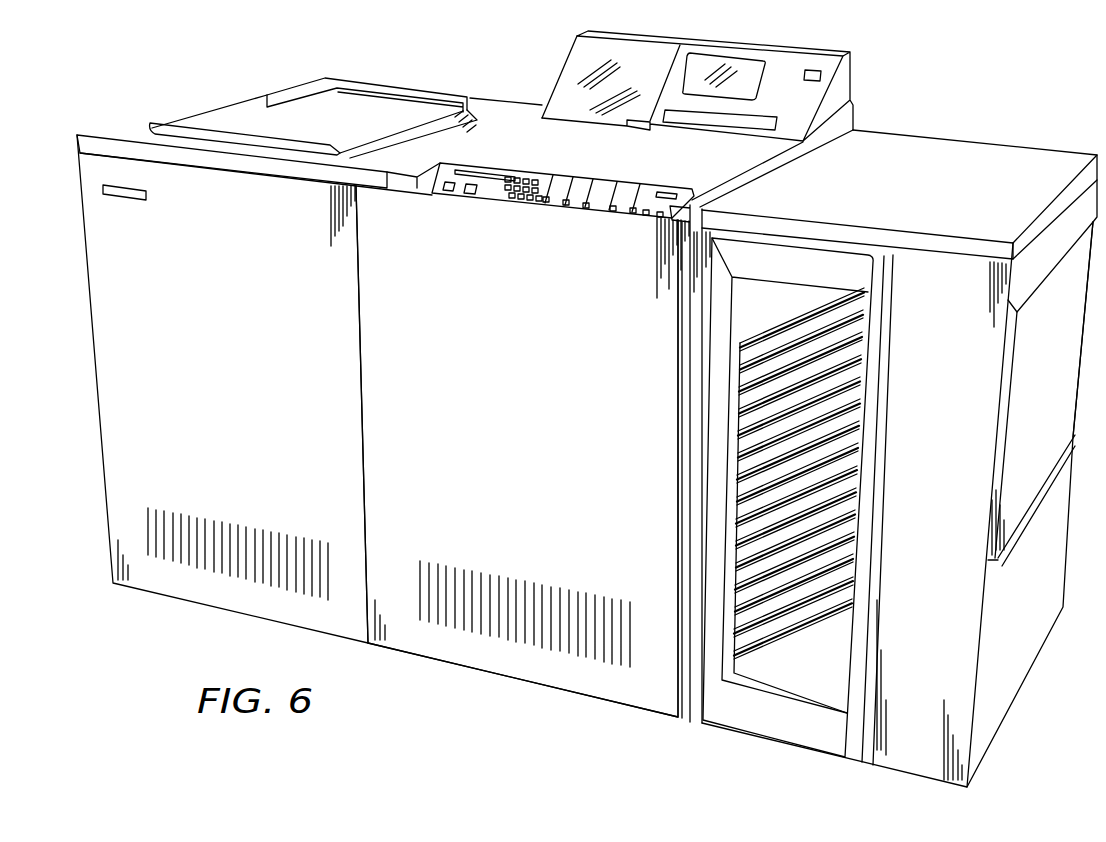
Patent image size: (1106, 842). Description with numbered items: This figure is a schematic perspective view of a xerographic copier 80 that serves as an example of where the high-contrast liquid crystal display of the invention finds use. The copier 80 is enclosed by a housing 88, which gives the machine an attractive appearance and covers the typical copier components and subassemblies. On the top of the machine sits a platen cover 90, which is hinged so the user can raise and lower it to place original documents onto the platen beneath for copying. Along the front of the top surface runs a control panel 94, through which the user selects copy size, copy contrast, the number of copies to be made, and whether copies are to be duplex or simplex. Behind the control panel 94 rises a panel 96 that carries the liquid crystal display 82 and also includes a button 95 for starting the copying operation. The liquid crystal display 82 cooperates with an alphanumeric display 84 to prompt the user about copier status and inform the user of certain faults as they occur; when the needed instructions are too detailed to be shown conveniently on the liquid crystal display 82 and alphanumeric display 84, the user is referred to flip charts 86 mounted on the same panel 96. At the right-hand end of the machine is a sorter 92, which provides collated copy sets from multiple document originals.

The copier 80 is at (870, 60).
The liquid crystal display 82 is at (698, 82).
The alphanumeric display 84 is at (688, 120).
The flip charts 86 is at (573, 70).
The housing 88 is at (363, 252).
The platen cover 90 is at (233, 123).
The sorter 92 is at (987, 380).
The control panel 94 is at (552, 183).
The button 95 is at (822, 77).
The panel 96 is at (793, 72).